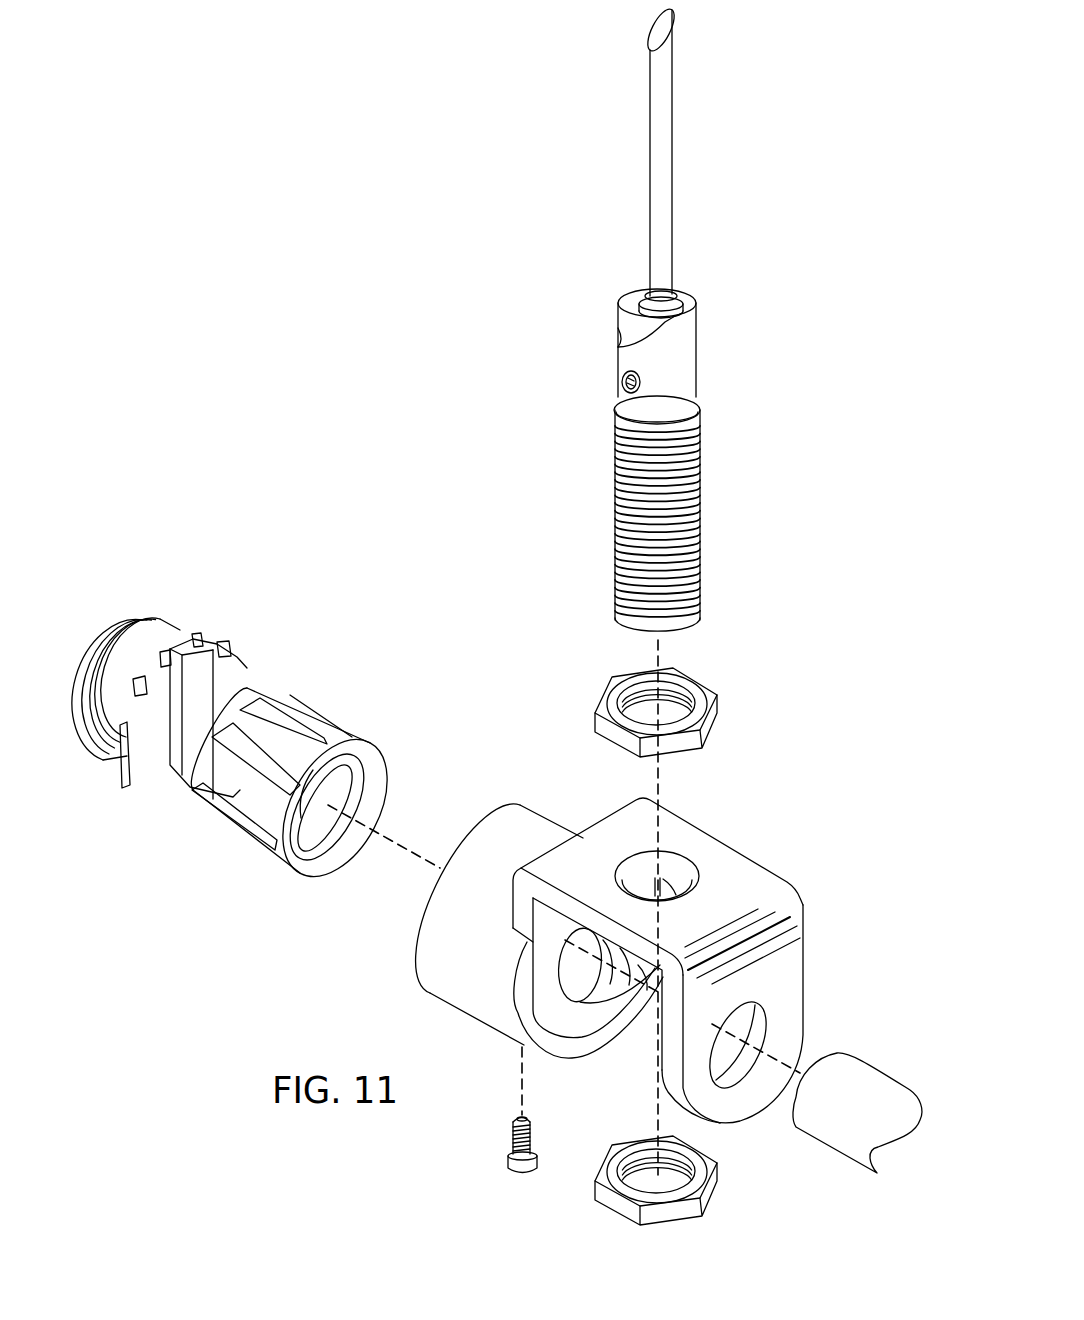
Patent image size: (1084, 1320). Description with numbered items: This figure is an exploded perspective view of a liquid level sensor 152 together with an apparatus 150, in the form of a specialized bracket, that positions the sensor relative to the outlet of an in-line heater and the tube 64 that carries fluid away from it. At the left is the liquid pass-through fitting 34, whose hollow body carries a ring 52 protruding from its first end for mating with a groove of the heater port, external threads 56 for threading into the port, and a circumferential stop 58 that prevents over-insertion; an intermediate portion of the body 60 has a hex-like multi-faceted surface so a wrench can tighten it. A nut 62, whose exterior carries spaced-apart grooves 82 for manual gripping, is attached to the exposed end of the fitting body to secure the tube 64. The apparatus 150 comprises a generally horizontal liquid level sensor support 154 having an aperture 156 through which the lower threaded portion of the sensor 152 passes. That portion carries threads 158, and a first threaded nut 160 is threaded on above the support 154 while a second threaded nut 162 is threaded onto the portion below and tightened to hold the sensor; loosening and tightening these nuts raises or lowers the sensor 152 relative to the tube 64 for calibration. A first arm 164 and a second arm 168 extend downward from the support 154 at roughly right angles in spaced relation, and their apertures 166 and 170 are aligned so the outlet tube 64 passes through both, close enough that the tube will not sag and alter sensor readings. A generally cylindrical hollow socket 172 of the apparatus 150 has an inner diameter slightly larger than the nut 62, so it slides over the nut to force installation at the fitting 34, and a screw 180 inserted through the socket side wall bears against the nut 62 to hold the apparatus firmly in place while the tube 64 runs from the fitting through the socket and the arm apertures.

The fitting 34 is at (240, 736).
The ring 52 is at (90, 650).
The external threads 56 is at (178, 622).
The stop 58 is at (128, 788).
The portion of the body 60 is at (155, 745).
The nut 62 is at (331, 703).
The tube 64 is at (872, 1080).
The grooves 82 is at (248, 790).
The apparatus 150 is at (639, 944).
The liquid level sensor 152 is at (579, 424).
The liquid level sensor support 154 is at (679, 840).
The aperture 156 is at (690, 866).
The threads 158 is at (704, 527).
The first threaded nut 160 is at (599, 691).
The second threaded nut 162 is at (614, 1214).
The first arm 164 is at (790, 956).
The aperture 166 is at (764, 1026).
The second arm 168 is at (545, 982).
The aperture 170 is at (597, 982).
The socket 172 is at (538, 816).
The screw 180 is at (512, 1142).